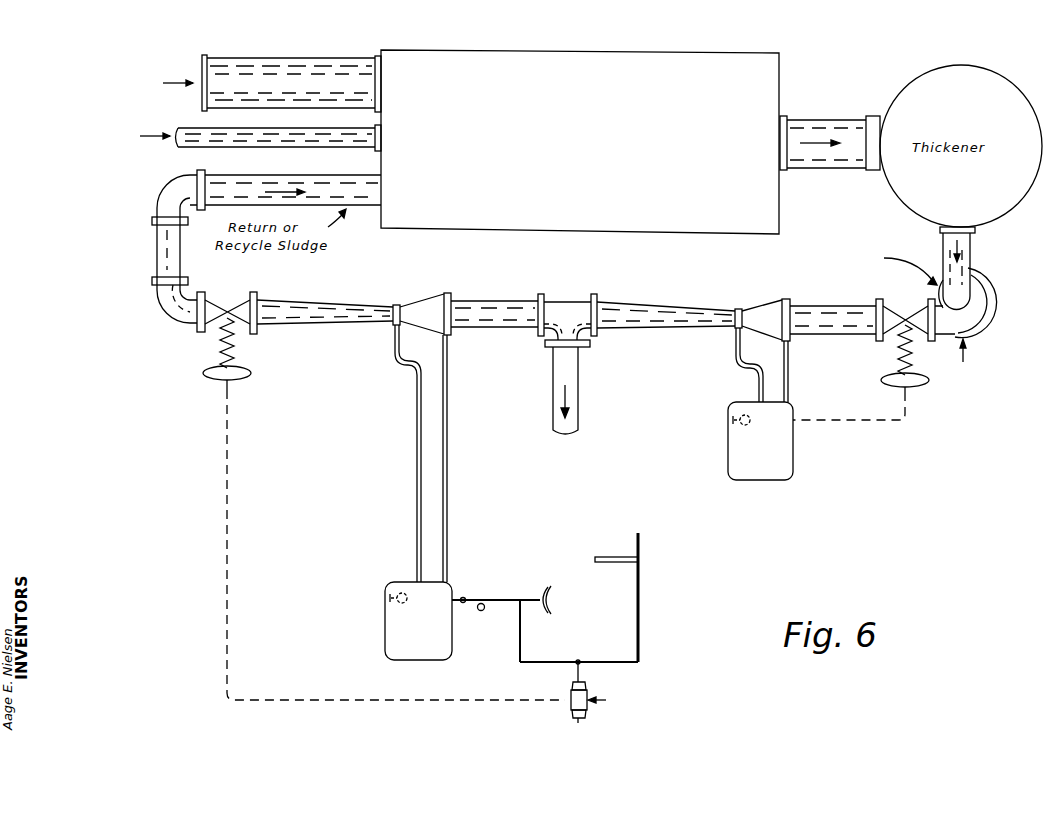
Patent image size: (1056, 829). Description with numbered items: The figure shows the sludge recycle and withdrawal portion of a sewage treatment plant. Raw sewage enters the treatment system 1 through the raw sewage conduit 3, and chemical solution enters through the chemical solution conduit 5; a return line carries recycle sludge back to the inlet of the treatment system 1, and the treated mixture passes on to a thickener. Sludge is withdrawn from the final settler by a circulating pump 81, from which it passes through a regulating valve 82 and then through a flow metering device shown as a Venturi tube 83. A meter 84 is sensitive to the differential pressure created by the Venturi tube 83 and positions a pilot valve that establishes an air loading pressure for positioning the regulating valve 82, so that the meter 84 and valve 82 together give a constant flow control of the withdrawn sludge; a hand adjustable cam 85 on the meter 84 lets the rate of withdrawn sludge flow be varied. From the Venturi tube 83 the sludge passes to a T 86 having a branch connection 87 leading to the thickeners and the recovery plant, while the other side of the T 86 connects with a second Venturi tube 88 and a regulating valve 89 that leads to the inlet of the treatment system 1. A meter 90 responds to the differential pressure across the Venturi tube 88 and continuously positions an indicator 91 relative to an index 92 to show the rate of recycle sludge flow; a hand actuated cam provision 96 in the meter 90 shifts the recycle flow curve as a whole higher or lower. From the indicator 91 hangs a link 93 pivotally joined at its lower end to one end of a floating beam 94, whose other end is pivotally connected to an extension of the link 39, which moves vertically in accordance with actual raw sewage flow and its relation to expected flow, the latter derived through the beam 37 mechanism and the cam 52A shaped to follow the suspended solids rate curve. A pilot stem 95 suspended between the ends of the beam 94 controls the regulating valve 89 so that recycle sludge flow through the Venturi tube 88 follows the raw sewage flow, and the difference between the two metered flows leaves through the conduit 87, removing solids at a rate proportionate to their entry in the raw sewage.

The mixing tank 1 is at (786, 86).
The raw sewage conduit 3 is at (321, 56).
The chemical solution conduit 5 is at (332, 131).
The beam 37 is at (620, 556).
The link 39 is at (640, 628).
The cam 52A is at (478, 610).
The circulating pump 81 is at (987, 286).
The regulating valve 82 is at (895, 307).
The Venturi tube 83 is at (666, 291).
The meter 84 is at (793, 440).
The hand adjustable cam 85 is at (738, 426).
The T 86 is at (556, 283).
The branch connection 87 is at (579, 395).
The second Venturi tube 88 is at (331, 288).
The regulating valve 89 is at (220, 311).
The meter 90 is at (385, 628).
The indicator 91 is at (496, 606).
The index 92 is at (553, 593).
The link 93 is at (520, 648).
The floating beam 94 is at (538, 660).
The pilot stem 95 is at (584, 682).
The hand actuated cam provision 96 is at (395, 604).